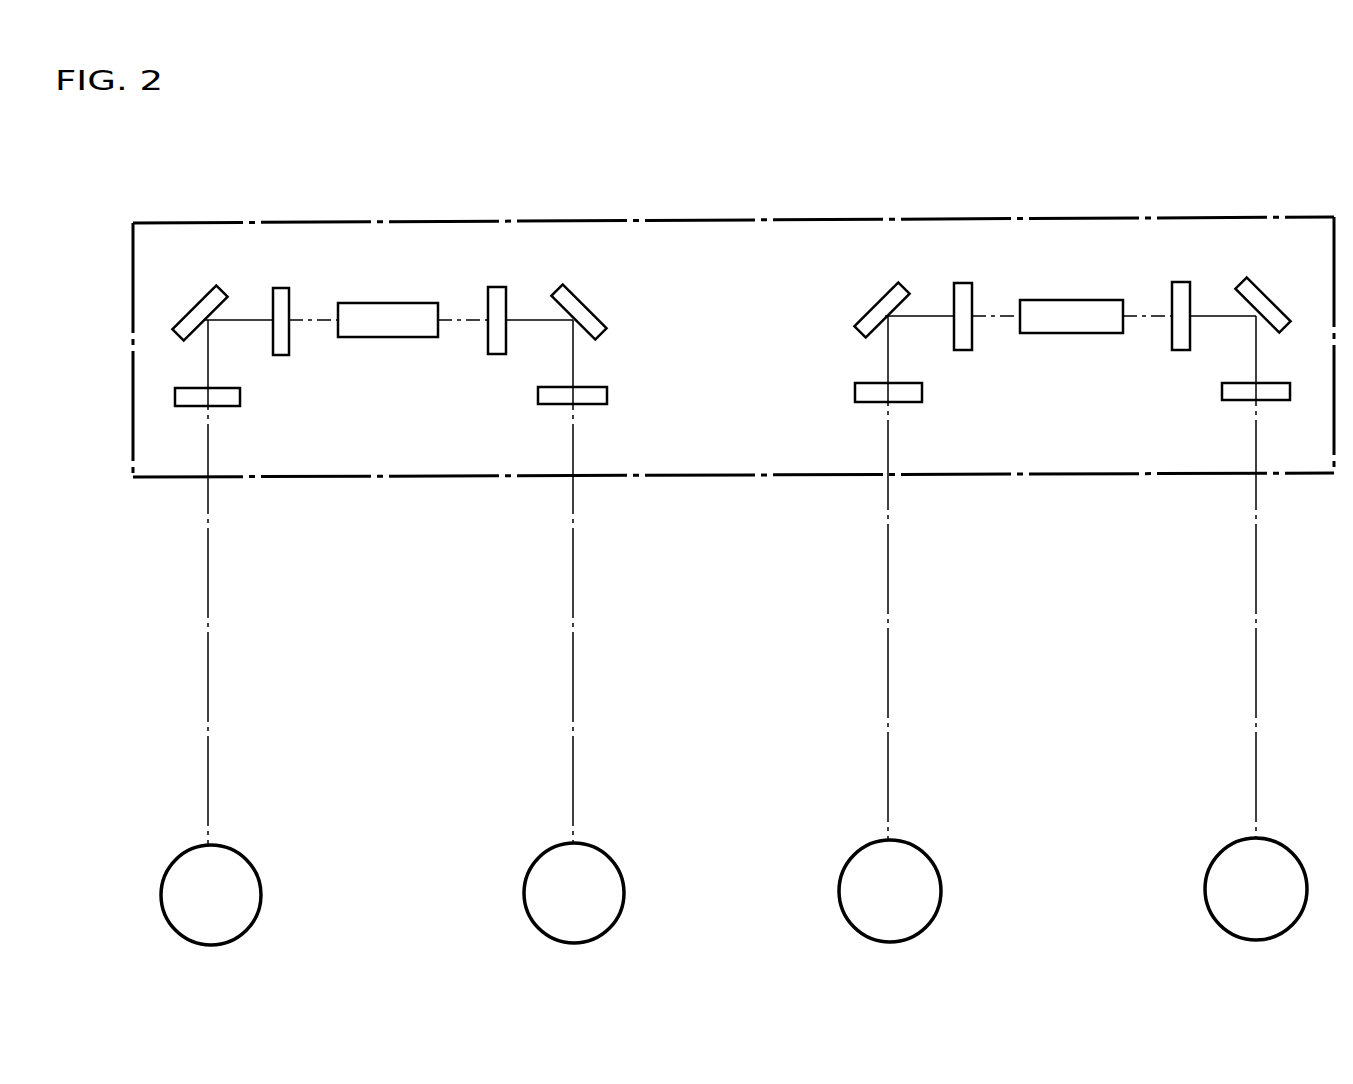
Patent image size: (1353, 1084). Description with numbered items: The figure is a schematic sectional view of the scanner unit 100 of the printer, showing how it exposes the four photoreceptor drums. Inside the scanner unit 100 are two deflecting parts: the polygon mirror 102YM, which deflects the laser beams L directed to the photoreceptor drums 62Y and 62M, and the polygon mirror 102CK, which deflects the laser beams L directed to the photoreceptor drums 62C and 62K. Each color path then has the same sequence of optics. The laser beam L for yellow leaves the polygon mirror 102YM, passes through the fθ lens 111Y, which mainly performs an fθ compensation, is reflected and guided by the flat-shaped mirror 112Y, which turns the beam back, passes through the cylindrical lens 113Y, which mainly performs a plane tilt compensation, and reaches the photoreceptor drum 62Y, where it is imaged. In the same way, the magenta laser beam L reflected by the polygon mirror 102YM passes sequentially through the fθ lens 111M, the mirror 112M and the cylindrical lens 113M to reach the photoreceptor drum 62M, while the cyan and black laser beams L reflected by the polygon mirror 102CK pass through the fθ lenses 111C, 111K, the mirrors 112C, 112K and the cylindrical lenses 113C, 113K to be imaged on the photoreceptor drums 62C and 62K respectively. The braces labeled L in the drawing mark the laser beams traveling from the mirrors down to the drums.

The scanner unit 100 is at (278, 218).
The polygon mirror 102CK is at (405, 305).
The polygon mirror 102YM is at (1075, 302).
The fθ lens 111K is at (282, 352).
The fθ lens 111C is at (497, 352).
The fθ lens 111M is at (965, 348).
The fθ lens 111Y is at (1182, 348).
The flat-shaped mirror 112K is at (200, 316).
The flat-shaped mirror 112C is at (568, 298).
The flat-shaped mirror 112M is at (886, 296).
The flat-shaped mirror 112Y is at (1250, 290).
The cylindrical lens 113K is at (215, 400).
The cylindrical lens 113C is at (560, 400).
The cylindrical lens 113M is at (905, 400).
The cylindrical lens 113Y is at (1245, 400).
The photoreceptor drum 62K is at (183, 870).
The photoreceptor drum 62C is at (546, 875).
The photoreceptor drum 62M is at (863, 875).
The photoreceptor drum 62Y is at (1230, 870).
The laser beam L is at (573, 631).